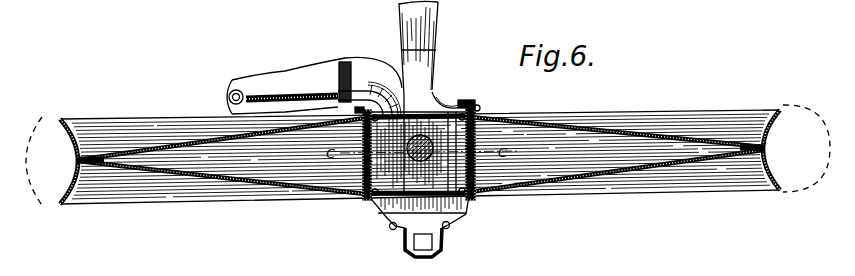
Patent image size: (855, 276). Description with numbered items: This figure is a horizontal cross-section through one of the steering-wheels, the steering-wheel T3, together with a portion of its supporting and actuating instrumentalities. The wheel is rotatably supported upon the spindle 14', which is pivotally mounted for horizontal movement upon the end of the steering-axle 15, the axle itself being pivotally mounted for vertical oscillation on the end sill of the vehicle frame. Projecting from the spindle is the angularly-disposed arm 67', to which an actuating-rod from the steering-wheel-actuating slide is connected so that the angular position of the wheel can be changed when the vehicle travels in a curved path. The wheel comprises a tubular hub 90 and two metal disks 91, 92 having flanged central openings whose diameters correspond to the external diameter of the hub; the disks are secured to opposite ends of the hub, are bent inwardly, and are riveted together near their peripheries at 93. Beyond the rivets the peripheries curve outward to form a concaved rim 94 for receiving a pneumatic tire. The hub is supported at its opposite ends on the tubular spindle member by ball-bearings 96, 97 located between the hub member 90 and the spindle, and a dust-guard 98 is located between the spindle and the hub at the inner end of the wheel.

The steering-axle 15 is at (438, 17).
The angularly-disposed arm 67' is at (314, 76).
The spindle 14' is at (449, 96).
The dust-guard 98 is at (470, 104).
The ball-bearing 96 is at (479, 109).
The tubular hub 90 is at (365, 170).
The ball-bearing 97 is at (458, 198).
The metal disk 91 is at (200, 146).
The metal disk 92 is at (258, 186).
The riveted joint 93 is at (102, 165).
The concaved rim 94 is at (72, 176).
The steering-wheel T3 is at (683, 118).